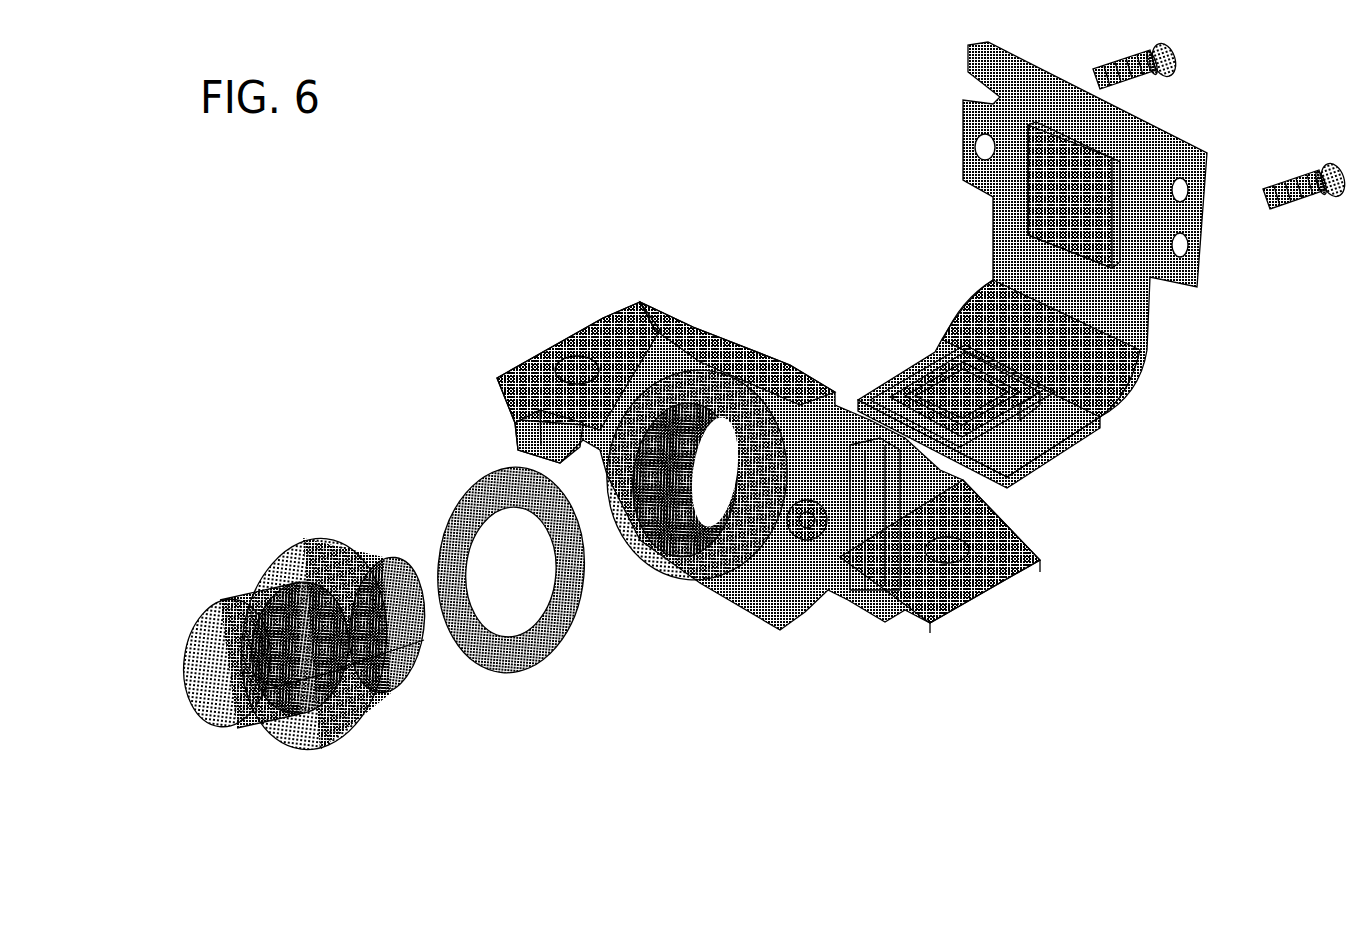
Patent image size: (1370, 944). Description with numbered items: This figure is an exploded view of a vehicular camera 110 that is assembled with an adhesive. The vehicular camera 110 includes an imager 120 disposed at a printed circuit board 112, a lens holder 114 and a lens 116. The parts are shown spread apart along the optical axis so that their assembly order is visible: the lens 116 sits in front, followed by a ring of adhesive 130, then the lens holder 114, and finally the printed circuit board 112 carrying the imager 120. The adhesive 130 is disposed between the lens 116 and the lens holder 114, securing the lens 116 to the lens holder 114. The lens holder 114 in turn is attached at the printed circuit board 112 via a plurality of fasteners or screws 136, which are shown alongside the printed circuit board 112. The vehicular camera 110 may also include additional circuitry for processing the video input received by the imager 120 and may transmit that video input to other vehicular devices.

The vehicular camera 110 is at (610, 136).
The printed circuit board 112 is at (1253, 285).
The lens holder 114 is at (605, 345).
The lens 116 is at (268, 606).
The imager 120 is at (1085, 228).
The adhesive 130 is at (530, 650).
The screws 136 is at (1178, 75).